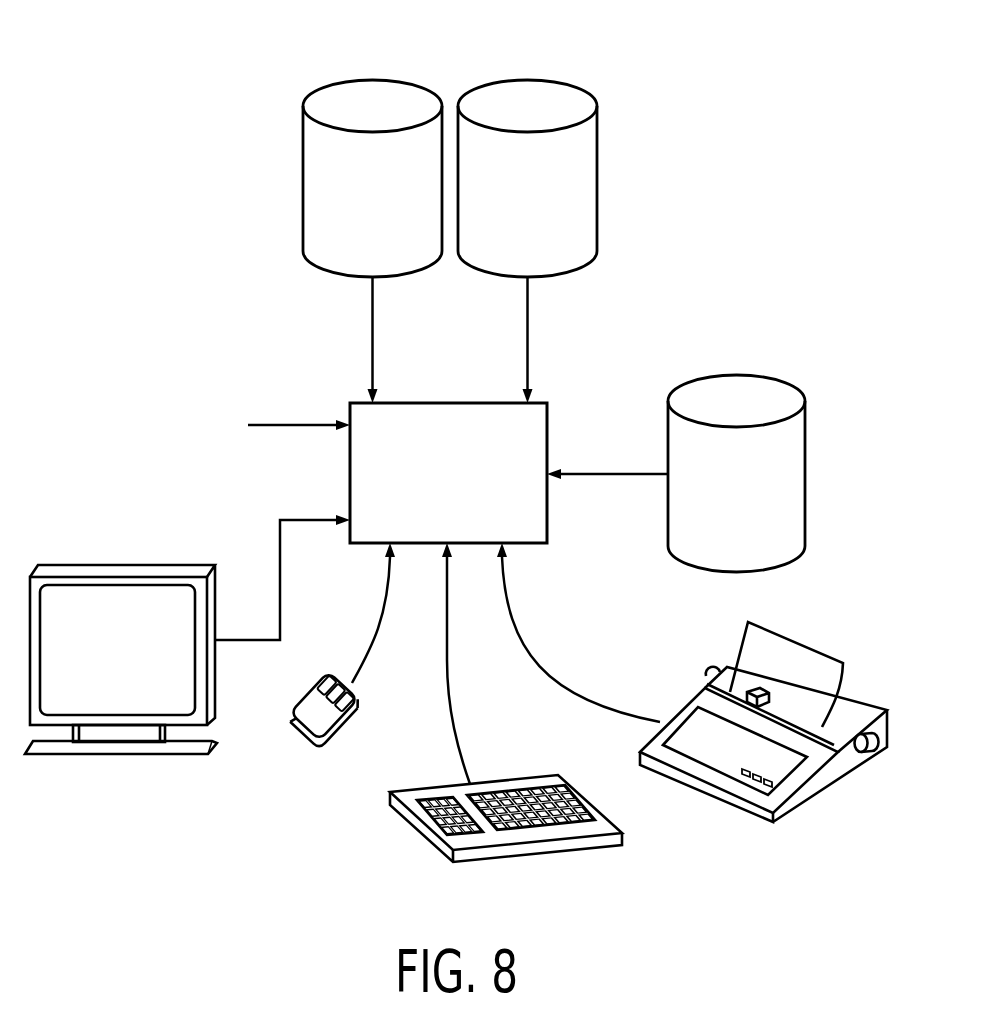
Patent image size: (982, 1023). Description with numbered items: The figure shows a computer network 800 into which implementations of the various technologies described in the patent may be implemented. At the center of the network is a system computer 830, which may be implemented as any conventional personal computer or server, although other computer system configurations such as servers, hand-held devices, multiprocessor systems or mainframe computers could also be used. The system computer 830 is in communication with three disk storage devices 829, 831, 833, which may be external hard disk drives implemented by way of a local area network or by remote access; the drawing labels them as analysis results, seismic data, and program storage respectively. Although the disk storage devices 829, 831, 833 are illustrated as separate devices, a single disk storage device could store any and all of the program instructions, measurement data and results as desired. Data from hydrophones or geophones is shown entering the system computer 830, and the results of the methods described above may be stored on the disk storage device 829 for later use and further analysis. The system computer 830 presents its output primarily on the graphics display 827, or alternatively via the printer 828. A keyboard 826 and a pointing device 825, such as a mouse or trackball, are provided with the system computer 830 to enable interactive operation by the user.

The computer network 800 is at (140, 155).
The pointing device 825 is at (342, 733).
The keyboard 826 is at (422, 830).
The graphics display 827 is at (127, 565).
The printer 828 is at (820, 788).
The disk storage device 829 is at (736, 374).
The system computer 830 is at (448, 402).
The disk storage device 831 is at (528, 79).
The disk storage device 833 is at (373, 79).